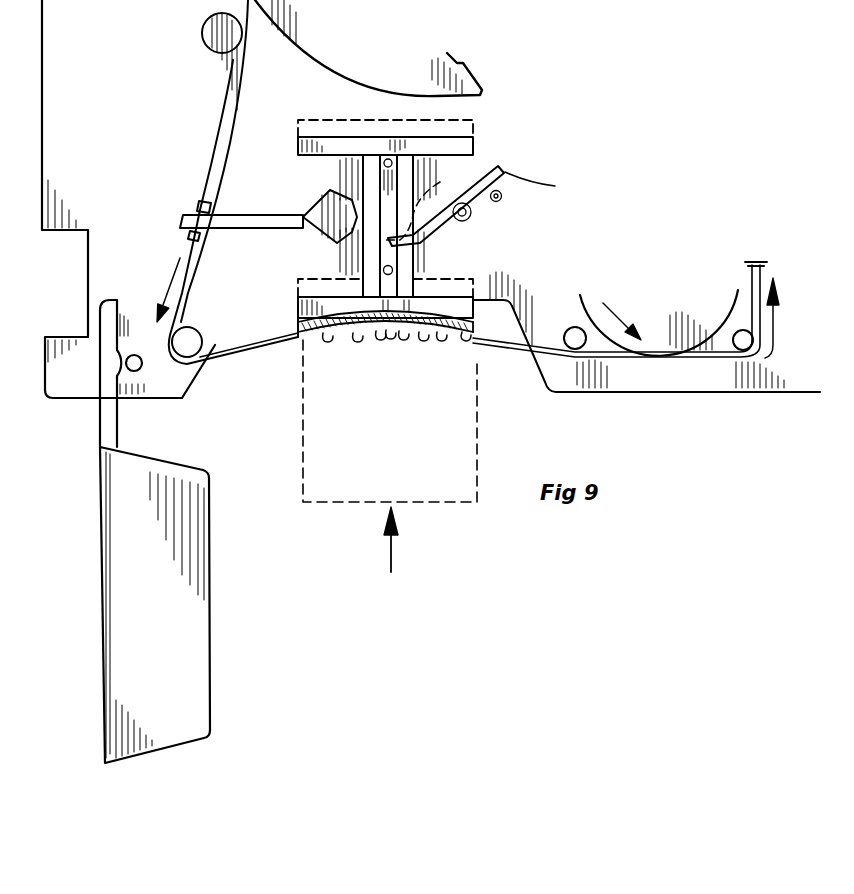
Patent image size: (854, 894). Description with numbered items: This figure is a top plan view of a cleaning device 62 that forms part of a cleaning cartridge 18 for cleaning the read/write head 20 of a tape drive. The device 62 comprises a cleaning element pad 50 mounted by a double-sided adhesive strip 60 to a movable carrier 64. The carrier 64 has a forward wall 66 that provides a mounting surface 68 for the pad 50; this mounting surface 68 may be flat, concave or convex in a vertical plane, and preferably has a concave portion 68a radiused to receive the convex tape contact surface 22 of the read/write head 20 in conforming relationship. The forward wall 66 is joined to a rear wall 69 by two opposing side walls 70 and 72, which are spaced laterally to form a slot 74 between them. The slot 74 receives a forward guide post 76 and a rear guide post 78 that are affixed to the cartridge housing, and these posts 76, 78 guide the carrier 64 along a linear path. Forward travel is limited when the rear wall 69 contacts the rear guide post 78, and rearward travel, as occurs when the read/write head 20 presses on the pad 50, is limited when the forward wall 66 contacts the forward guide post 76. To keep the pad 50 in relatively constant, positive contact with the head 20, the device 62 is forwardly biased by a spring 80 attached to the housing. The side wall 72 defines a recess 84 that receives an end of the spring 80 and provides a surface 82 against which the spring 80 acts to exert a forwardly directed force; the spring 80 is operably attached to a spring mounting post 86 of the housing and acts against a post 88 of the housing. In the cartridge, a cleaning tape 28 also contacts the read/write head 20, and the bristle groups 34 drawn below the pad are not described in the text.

The cleaning cartridge 18 is at (673, 418).
The read/write head 20 is at (334, 515).
The tape contact surface 22 is at (310, 342).
The cleaning tape 28 is at (249, 360).
The brush fingers 34 is at (380, 340).
The cleaning element pad 50 is at (460, 300).
The double-sided adhesive strip 60 is at (512, 306).
The cleaning device 62 is at (281, 325).
The carrier 64 is at (481, 131).
The forward wall 66 is at (305, 296).
The mounting surface 68 is at (467, 341).
The concave portion 68a is at (390, 339).
The rear wall 69 is at (475, 140).
The side wall 70 is at (372, 192).
The side wall 72 is at (405, 178).
The slot 74 is at (393, 258).
The forward guide post 76 is at (383, 270).
The rear guide post 78 is at (380, 155).
The spring 80 is at (545, 186).
The surface 82 is at (437, 240).
The recess 84 is at (446, 206).
The spring mounting post 86 is at (471, 215).
The post 88 is at (503, 196).